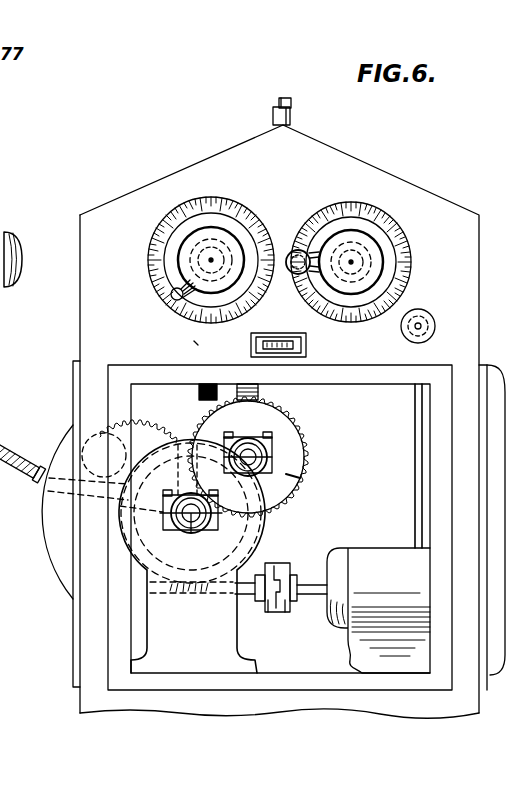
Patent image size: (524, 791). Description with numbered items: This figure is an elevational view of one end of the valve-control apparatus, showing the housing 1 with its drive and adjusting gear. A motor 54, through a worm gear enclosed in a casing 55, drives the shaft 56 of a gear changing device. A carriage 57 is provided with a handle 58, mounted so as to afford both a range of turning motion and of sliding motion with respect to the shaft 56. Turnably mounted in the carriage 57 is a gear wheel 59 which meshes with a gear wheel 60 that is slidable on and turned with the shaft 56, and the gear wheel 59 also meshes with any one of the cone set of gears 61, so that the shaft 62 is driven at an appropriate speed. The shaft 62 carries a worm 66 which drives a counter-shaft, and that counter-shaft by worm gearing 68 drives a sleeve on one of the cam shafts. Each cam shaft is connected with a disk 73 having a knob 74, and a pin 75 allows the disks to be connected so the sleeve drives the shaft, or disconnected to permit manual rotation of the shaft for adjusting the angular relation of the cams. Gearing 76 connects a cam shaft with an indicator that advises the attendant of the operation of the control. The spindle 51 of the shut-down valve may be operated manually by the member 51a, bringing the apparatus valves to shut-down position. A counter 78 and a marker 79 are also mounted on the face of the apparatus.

The housing 1 is at (445, 199).
The spindle 51 is at (416, 468).
The manual operating member 51a is at (425, 314).
The motor 54 is at (366, 552).
The casing 55 is at (265, 509).
The shaft 56 is at (192, 518).
The carriage 57 is at (111, 433).
The handle 58 is at (19, 461).
The gear wheel 59 is at (175, 430).
The gear wheel 60 is at (173, 543).
The cone set of gears 61 is at (298, 423).
The shaft 62 is at (250, 457).
The worm 66 is at (292, 477).
The worm gearing 68 is at (200, 396).
The disk 73 is at (150, 268).
The knob 74 is at (193, 250).
The pin 75 is at (170, 296).
The gearing 76 is at (277, 104).
The counter 78 is at (251, 343).
The marker 79 is at (291, 252).